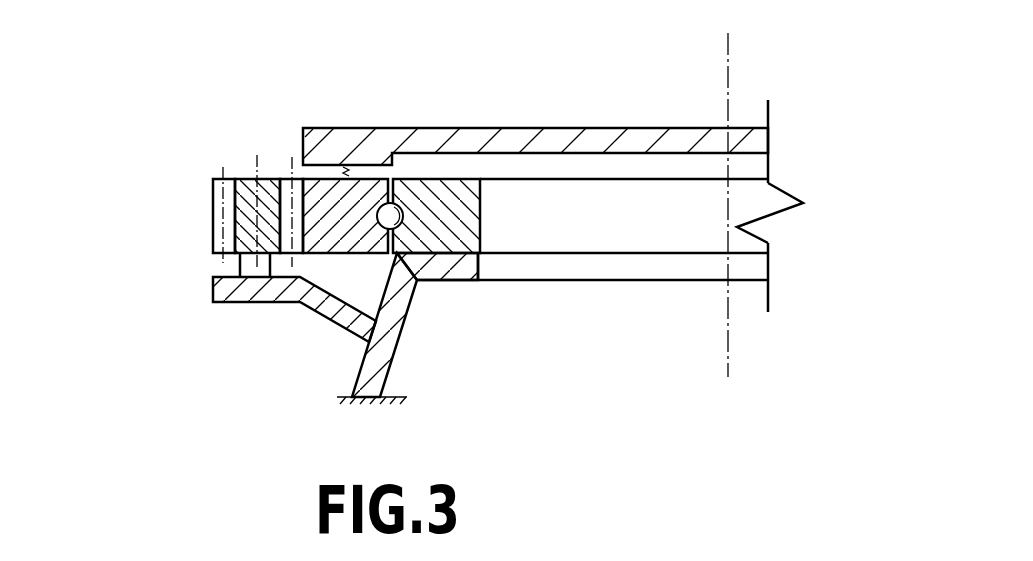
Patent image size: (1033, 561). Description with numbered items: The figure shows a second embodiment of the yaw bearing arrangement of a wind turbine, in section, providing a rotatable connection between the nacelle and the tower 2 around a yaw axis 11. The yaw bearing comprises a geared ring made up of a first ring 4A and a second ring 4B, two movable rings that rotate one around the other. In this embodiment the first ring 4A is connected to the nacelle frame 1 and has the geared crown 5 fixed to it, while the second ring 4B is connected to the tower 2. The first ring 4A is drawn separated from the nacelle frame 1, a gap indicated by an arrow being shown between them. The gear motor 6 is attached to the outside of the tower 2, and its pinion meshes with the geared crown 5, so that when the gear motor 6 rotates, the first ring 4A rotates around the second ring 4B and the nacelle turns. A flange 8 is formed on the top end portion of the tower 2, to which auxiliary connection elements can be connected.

The nacelle frame 1 is at (533, 135).
The tower 2 is at (363, 378).
The first ring 4A is at (323, 207).
The second ring 4B is at (428, 185).
The geared crown 5 is at (293, 178).
The gear motor 6 is at (235, 178).
The flange 8 is at (443, 272).
The yaw axis 11 is at (725, 65).